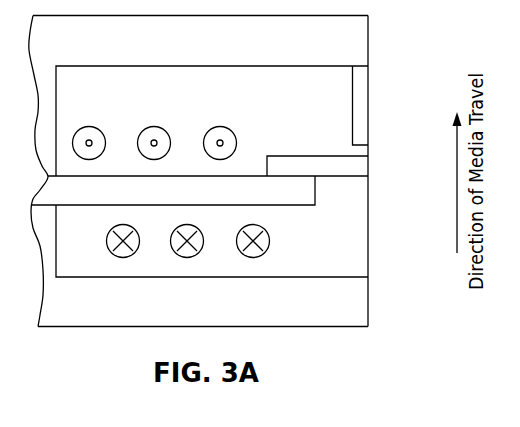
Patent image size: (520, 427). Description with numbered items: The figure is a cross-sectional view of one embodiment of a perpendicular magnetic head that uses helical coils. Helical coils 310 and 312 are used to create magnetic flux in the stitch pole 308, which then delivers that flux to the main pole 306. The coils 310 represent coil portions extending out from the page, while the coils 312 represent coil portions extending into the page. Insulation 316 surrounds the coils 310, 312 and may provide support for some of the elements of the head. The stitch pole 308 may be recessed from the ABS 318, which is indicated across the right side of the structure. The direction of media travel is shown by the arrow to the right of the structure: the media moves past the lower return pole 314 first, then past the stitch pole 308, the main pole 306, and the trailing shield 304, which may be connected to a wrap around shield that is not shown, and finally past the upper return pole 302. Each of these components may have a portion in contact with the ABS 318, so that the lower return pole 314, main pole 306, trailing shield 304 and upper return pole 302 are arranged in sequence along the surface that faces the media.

The upper return pole 302 is at (281, 50).
The trailing shield 304 is at (368, 109).
The main pole 306 is at (368, 162).
The stitch pole 308 is at (228, 198).
The helical coils extending out of the page 310 is at (86, 127).
The helical coils extending into the page 312 is at (106, 246).
The lower return pole 314 is at (228, 310).
The insulation 316 is at (315, 118).
The ABS 318 is at (377, 33).